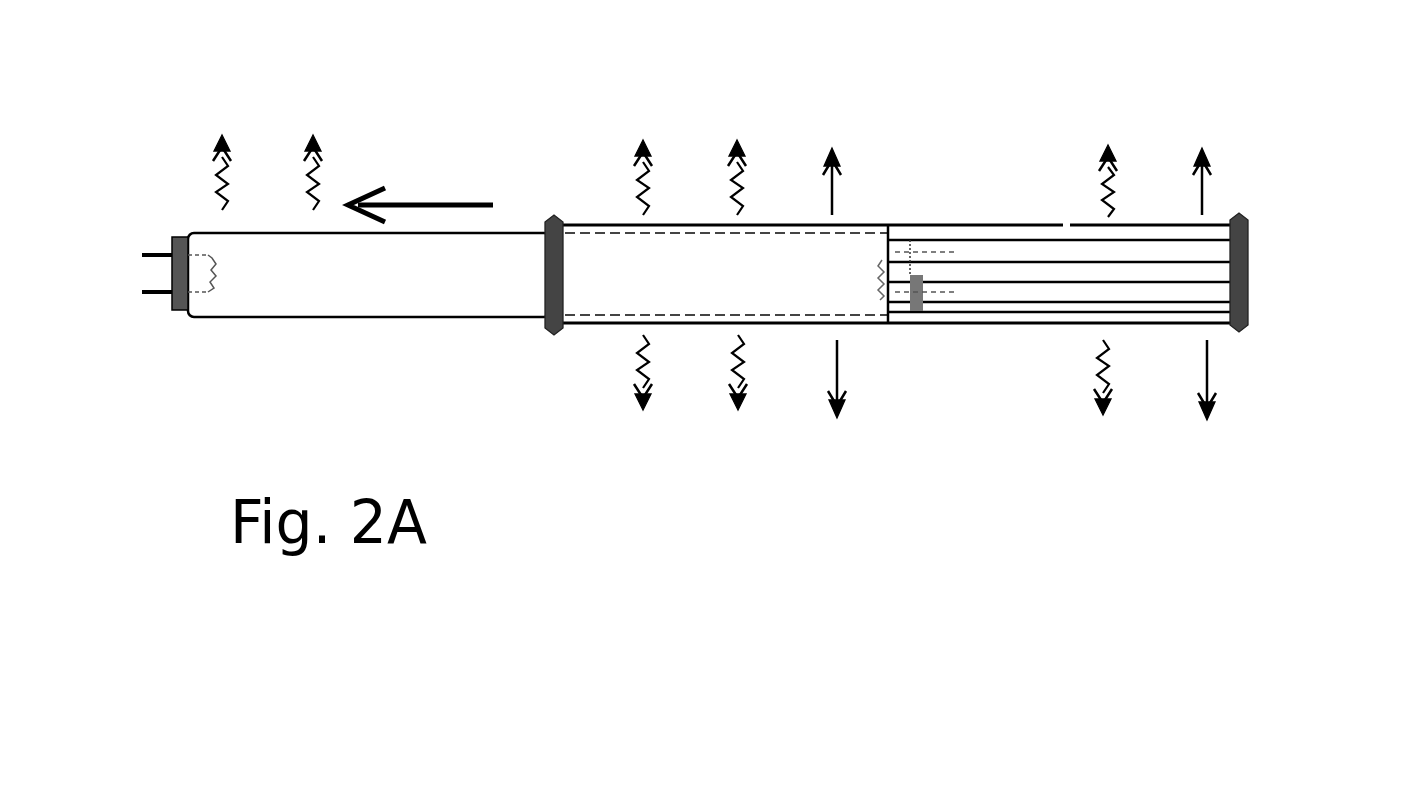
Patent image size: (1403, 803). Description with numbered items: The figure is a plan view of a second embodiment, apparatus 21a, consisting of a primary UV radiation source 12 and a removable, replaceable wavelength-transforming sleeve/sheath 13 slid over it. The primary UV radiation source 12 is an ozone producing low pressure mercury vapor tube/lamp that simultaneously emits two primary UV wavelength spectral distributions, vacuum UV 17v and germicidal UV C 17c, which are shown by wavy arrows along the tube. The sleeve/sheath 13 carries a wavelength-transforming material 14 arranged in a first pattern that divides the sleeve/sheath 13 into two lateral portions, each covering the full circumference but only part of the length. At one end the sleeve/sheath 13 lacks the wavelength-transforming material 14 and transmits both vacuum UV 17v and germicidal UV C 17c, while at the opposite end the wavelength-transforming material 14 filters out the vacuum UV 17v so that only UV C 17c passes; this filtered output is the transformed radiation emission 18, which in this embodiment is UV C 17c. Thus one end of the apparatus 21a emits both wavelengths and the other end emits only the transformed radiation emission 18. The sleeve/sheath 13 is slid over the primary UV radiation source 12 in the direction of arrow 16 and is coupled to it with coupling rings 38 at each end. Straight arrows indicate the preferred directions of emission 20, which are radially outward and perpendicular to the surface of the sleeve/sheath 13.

The primary UV radiation source 12 is at (363, 327).
The sleeve/sheath 13 is at (580, 190).
The wavelength-transforming material 14 is at (1063, 232).
The arrow 16 is at (420, 193).
The vacuum UV 17v is at (433, 277).
The germicidal UV C 17c is at (530, 277).
The transformed radiation emission 18 is at (1102, 282).
The directions of emission 20 is at (1020, 288).
The apparatus 21a is at (977, 287).
The coupling rings 38 is at (553, 343).